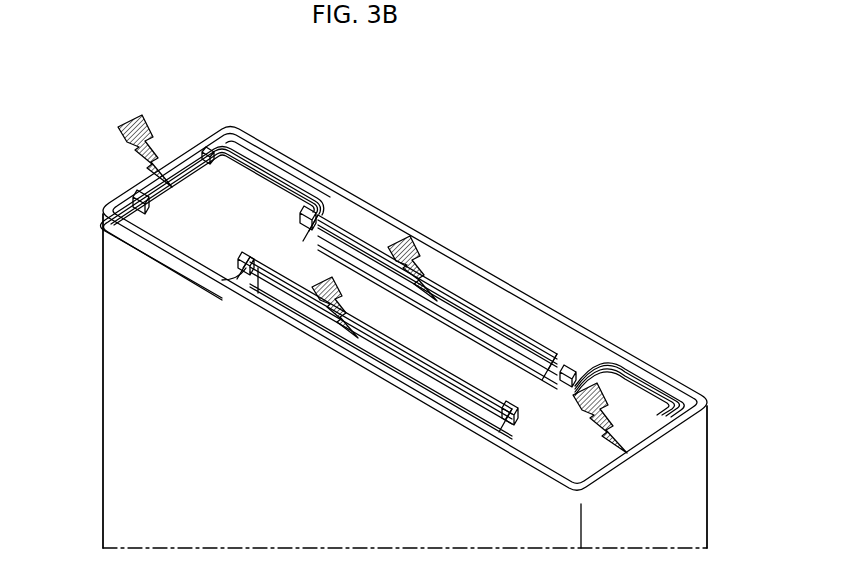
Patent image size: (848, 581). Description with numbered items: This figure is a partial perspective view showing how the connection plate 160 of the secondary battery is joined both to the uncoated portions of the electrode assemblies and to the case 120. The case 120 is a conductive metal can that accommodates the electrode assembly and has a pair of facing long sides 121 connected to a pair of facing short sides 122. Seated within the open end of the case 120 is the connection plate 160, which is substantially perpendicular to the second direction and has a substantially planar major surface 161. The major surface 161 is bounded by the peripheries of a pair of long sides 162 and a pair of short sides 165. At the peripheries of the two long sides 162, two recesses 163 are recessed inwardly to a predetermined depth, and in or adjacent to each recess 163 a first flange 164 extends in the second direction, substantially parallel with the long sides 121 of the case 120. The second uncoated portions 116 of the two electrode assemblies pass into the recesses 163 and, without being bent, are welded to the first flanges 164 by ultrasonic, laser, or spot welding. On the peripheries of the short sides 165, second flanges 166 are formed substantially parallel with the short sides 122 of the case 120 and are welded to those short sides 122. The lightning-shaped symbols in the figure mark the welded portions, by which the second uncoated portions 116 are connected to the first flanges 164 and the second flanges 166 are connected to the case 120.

The second uncoated portion 116 is at (372, 250).
The case 120 is at (709, 397).
The long sides 121 is at (578, 326).
The short sides 122 is at (112, 198).
The connection plate 160 is at (227, 141).
The major surface 161 is at (240, 183).
The long sides 162 is at (281, 159).
The recess 163 is at (510, 318).
The first flange 164 is at (290, 293).
The short sides 165 is at (141, 185).
The second flange 166 is at (185, 168).